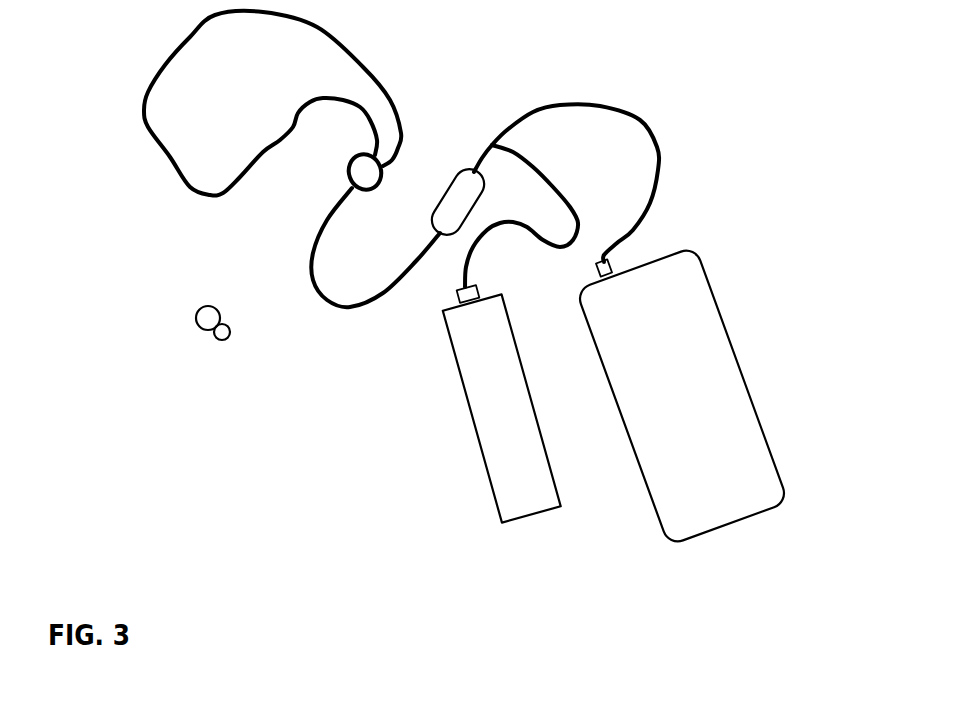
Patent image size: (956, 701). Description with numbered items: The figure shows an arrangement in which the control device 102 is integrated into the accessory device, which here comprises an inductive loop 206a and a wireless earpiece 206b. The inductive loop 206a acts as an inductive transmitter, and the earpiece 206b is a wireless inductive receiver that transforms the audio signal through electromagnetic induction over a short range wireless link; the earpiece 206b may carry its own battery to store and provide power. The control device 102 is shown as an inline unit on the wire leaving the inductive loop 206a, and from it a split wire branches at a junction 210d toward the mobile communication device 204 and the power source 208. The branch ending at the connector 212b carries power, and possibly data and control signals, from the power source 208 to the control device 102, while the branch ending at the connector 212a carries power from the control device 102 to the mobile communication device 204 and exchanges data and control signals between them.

The control device 102 is at (447, 178).
The mobile communication device 204 is at (742, 368).
The inductive loop 206a is at (380, 82).
The wireless earpiece 206b is at (198, 310).
The power source 208 is at (472, 422).
The cable junction 210d is at (492, 145).
The connector 212a is at (612, 262).
The connector 212b is at (456, 302).